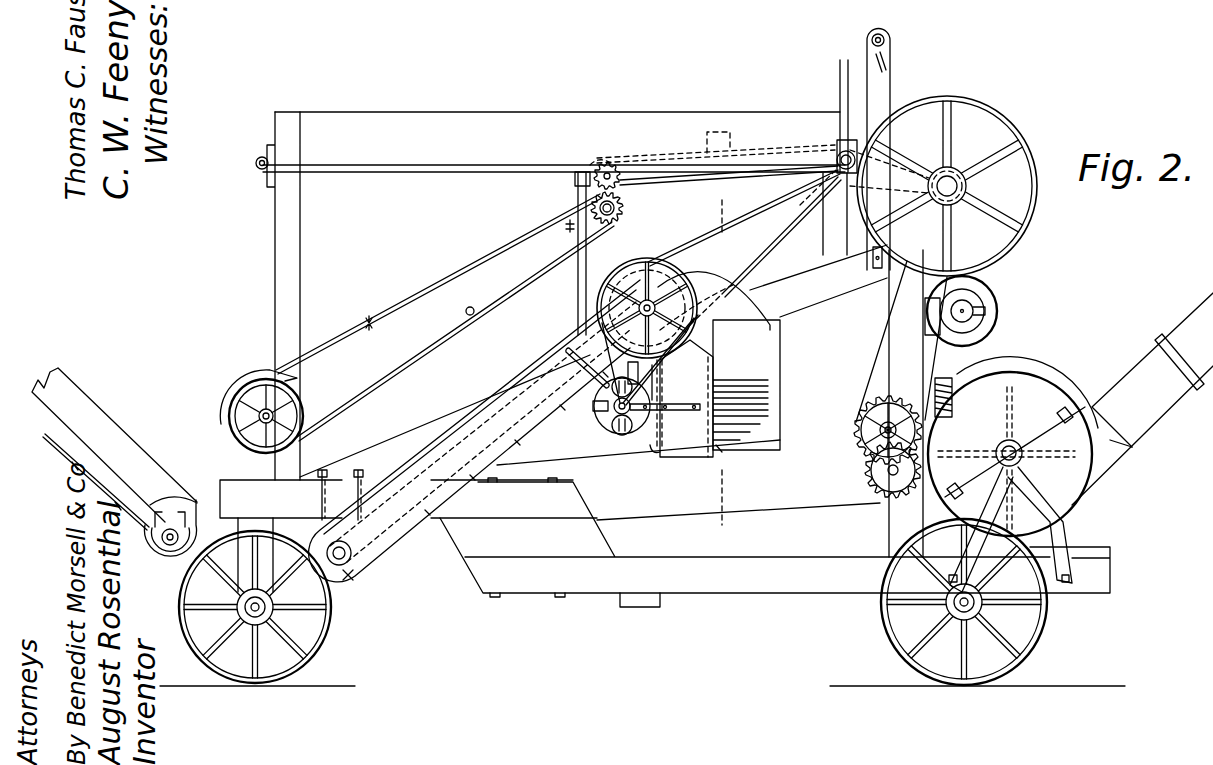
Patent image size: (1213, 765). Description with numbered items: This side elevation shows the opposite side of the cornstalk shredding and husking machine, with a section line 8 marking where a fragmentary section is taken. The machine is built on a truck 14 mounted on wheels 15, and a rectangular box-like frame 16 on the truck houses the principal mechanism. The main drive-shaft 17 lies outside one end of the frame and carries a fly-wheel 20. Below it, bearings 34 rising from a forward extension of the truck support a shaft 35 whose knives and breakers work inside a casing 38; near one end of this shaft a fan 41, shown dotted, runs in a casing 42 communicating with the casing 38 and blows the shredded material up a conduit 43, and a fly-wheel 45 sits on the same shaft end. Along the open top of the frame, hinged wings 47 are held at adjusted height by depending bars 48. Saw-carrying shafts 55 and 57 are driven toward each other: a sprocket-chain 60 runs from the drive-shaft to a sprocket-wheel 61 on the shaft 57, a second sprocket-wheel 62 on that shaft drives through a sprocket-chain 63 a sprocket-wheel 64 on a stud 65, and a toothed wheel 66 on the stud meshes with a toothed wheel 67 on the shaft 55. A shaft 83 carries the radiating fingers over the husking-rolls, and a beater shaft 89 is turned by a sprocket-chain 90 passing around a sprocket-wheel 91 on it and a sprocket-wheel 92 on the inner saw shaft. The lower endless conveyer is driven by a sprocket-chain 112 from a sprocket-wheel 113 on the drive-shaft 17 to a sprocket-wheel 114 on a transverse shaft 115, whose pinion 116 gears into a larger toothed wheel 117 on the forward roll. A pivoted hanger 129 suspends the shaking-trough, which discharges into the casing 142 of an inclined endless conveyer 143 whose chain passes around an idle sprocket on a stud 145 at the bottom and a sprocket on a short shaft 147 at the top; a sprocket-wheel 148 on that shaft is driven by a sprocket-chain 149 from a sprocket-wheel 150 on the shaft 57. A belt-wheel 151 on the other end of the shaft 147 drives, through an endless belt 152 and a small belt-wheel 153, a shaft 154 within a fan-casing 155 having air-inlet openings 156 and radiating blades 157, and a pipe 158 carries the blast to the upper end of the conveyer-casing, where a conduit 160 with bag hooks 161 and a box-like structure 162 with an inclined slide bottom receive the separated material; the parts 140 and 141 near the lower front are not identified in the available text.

The section line 8 is at (721, 362).
The truck 14 is at (708, 588).
The wheels 15 is at (332, 616).
The frame 16 is at (305, 220).
The main drive-shaft 17 is at (950, 182).
The fly-wheel 20 is at (1028, 232).
The bearings 34 is at (1038, 514).
The shaft 35 is at (1012, 447).
The casing 38 is at (952, 372).
The fan 41 is at (1002, 404).
The casing 42 is at (1030, 378).
The conduit 43 is at (1178, 397).
The fly-wheel 45 is at (1068, 392).
The wings 47 is at (462, 118).
The bars 48 is at (578, 190).
The transverse shaft 55 is at (613, 207).
The transverse shaft 57 is at (846, 140).
The sprocket-chain 60 is at (926, 160).
The sprocket-wheel 61 is at (862, 118).
The sprocket-wheel 62 is at (838, 155).
The sprocket-chain 63 is at (755, 150).
The sprocket-wheel 64 is at (600, 162).
The stud 65 is at (610, 172).
The toothed wheel 66 is at (624, 179).
The toothed wheel 67 is at (614, 218).
The shaft 83 is at (470, 307).
The transverse shaft 89 is at (303, 400).
The sprocket-chain 90 is at (412, 358).
The sprocket-wheel 91 is at (439, 284).
The sprocket-wheel 92 is at (576, 204).
The endless sprocket-chain 112 is at (870, 340).
The sprocket-wheel 113 is at (966, 187).
The sprocket-wheel 114 is at (882, 400).
The transverse shaft 115 is at (893, 418).
The toothed pinion 116 is at (862, 430).
The toothed wheel 117 is at (870, 474).
The pivoted hanger 129 is at (318, 486).
The roller 140 is at (167, 548).
The cutter bar 141 is at (92, 497).
The casing 142 is at (392, 548).
The endless conveyer 143 is at (412, 474).
The stud 145 is at (345, 566).
The short shaft 147 is at (720, 285).
The sprocket-wheel 148 is at (632, 280).
The sprocket-chain 149 is at (704, 238).
The sprocket-wheel 150 is at (812, 190).
The belt-wheel 151 is at (700, 280).
The endless belt 152 is at (654, 370).
The small belt-wheel 153 is at (618, 426).
The shaft 154 is at (626, 440).
The fan-casing 155 is at (652, 422).
The openings 156 is at (600, 414).
The blades 157 is at (596, 412).
The pipe 158 is at (690, 348).
The conduit 160 is at (690, 452).
The hooks 161 is at (722, 454).
The box-like structure 162 is at (756, 366).